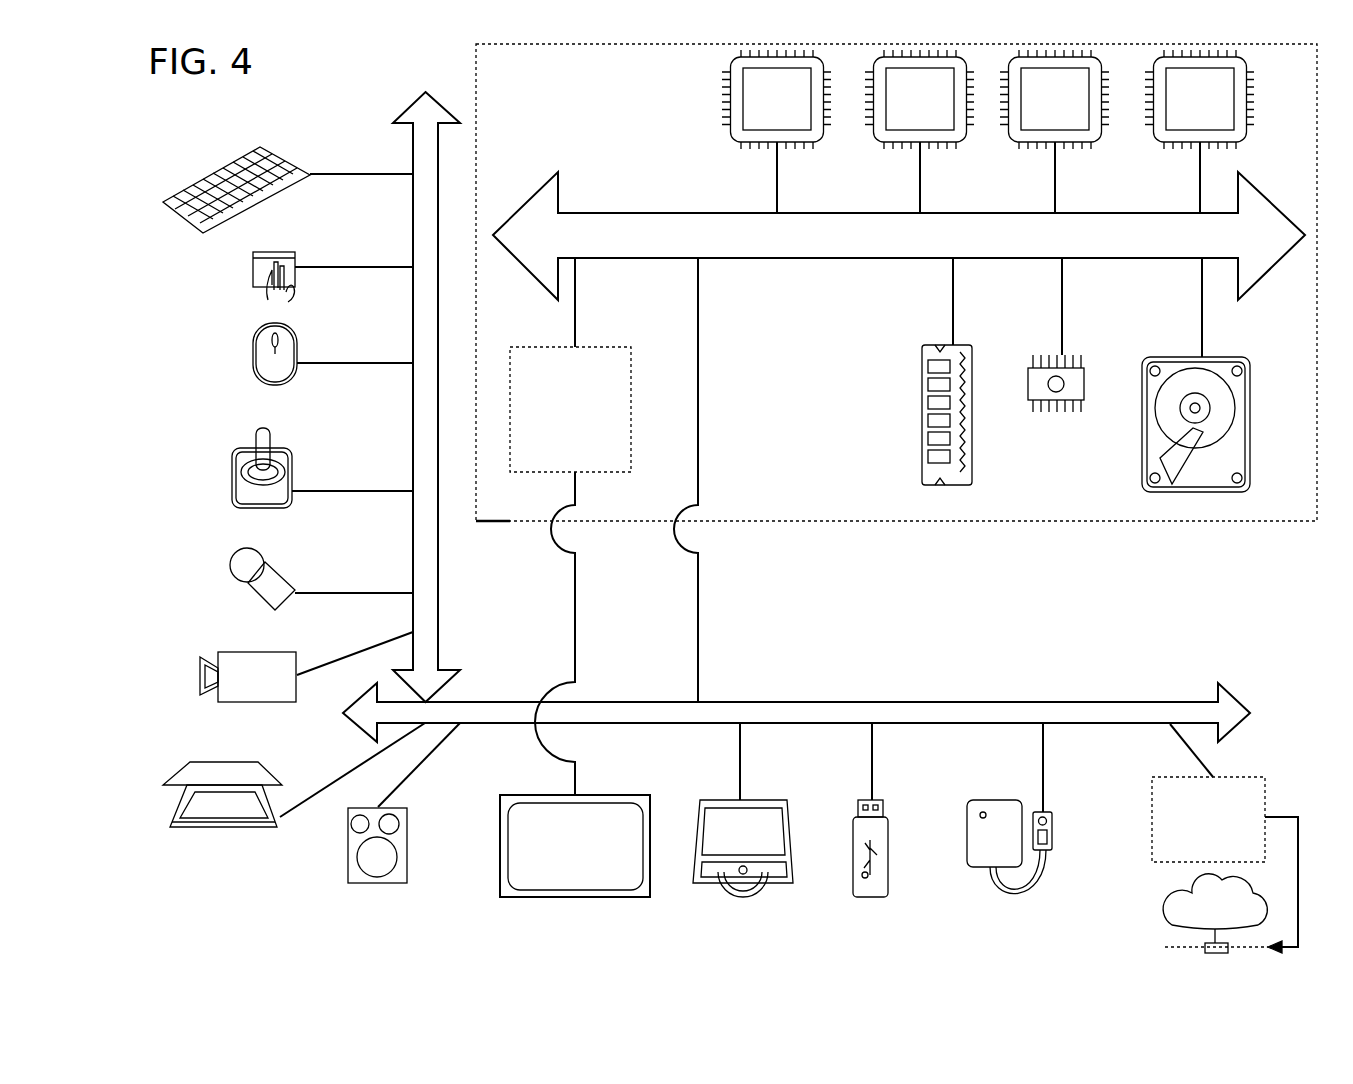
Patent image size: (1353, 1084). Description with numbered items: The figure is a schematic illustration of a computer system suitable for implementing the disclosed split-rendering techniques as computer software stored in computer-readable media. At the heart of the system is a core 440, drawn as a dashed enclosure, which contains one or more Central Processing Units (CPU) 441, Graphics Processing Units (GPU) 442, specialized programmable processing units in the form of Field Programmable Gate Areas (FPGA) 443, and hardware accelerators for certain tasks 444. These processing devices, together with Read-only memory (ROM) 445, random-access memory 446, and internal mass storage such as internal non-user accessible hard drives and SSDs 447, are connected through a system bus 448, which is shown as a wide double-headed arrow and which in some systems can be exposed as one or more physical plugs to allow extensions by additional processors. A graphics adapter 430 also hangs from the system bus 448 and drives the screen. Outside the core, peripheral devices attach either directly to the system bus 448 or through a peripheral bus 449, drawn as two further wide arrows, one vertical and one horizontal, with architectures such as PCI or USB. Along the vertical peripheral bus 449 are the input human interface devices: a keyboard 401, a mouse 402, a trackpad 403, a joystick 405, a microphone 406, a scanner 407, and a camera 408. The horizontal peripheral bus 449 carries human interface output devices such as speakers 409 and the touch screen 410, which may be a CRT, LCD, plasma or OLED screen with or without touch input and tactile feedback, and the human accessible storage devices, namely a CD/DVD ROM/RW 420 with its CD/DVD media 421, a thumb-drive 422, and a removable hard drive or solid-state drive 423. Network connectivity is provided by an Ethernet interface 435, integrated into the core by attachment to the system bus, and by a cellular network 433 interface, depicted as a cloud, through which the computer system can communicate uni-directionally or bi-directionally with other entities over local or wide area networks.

The keyboard 401 is at (163, 205).
The mouse 402 is at (253, 360).
The trackpad 403 is at (253, 270).
The joystick 405 is at (232, 492).
The microphone 406 is at (230, 568).
The scanner 407 is at (170, 818).
The camera 408 is at (200, 678).
The speakers 409 is at (372, 883).
The touch screen 410 is at (567, 897).
The CD/DVD ROM/RW 420 is at (761, 843).
The CD/DVD media 421 is at (727, 893).
The thumb-drive 422 is at (868, 900).
The removable hard drive or solid-state drive 423 is at (972, 872).
The graphics adapter 430 is at (570, 526).
The cellular network interface 433 is at (1168, 915).
The Ethernet interface 435 is at (1225, 838).
The core 440 is at (888, 521).
The Central Processing Unit (CPU) 441 is at (776, 131).
The Graphics Processing Unit (GPU) 442 is at (919, 131).
The Field Programmable Gate Area (FPGA) 443 is at (1054, 131).
The hardware accelerator 444 is at (1199, 131).
The Read-only memory (ROM) 445 is at (1058, 412).
The random-access memory 446 is at (922, 400).
The internal mass storage 447 is at (1162, 357).
The system bus 448 is at (899, 236).
The peripheral bus 449 is at (413, 122).